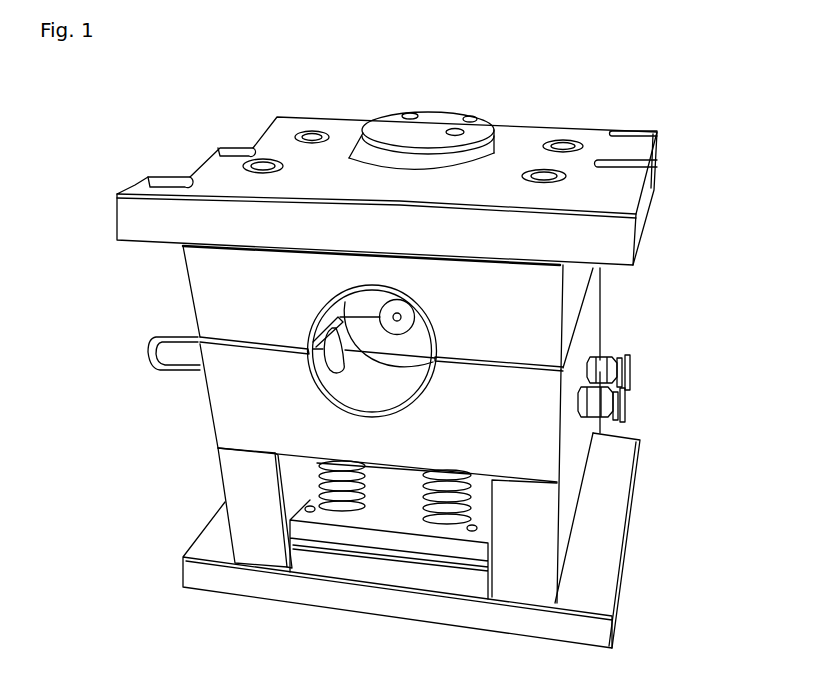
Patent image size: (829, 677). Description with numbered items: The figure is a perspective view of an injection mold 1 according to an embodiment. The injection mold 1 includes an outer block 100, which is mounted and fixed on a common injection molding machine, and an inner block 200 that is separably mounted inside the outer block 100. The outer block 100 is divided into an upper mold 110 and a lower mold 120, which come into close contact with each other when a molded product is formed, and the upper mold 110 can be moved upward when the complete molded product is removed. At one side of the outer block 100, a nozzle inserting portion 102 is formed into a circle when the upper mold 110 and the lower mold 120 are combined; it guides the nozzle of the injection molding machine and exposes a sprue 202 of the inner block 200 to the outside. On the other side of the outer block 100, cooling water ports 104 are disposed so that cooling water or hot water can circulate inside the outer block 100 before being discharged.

The injection mold 1 is at (659, 97).
The outer block 100 is at (82, 342).
The upper mold 110 is at (190, 321).
The lower mold 120 is at (220, 478).
The inner block 200 is at (426, 341).
The sprue 202 is at (380, 313).
The nozzle inserting portion 102 is at (366, 376).
The cooling water ports 104 is at (631, 372).